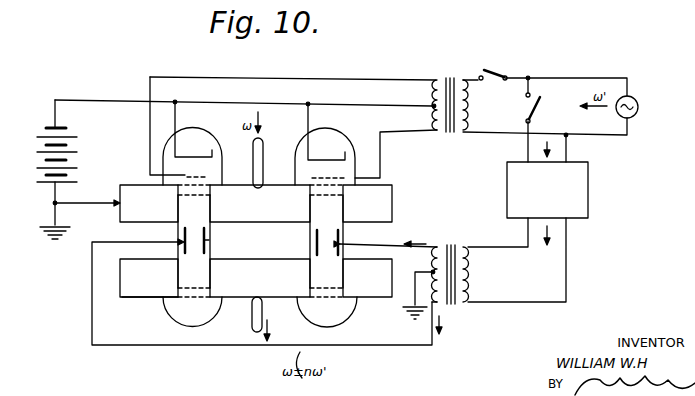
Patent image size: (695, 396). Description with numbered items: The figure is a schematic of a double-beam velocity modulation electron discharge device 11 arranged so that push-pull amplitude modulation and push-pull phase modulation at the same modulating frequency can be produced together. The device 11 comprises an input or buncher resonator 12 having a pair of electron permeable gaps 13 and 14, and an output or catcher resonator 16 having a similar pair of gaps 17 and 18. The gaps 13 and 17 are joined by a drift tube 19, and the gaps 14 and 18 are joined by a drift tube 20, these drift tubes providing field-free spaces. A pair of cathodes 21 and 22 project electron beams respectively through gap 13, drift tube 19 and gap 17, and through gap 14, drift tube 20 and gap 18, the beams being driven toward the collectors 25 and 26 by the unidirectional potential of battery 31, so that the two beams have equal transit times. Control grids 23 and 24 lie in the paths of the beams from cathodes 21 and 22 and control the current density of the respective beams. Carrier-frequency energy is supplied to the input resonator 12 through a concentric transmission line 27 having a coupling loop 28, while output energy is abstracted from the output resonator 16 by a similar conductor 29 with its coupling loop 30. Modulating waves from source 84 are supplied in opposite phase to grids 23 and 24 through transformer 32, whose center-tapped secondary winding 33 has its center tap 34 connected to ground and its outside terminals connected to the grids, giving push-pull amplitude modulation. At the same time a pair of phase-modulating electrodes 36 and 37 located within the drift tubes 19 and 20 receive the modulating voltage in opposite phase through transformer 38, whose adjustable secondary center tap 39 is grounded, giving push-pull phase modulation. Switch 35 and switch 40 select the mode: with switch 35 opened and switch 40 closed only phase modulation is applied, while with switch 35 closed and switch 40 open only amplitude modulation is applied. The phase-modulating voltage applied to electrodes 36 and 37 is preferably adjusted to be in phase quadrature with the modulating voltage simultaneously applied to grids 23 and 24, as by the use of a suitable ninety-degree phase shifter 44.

The double-beam velocity modulation electron discharge device 11 is at (397, 201).
The input resonator 12 is at (134, 183).
The electron permeable gap 13 is at (176, 190).
The electron permeable gap 14 is at (350, 192).
The output resonator 16 is at (147, 299).
The electron permeable gap 17 is at (178, 291).
The electron permeable gap 18 is at (345, 293).
The drift tube 19 is at (212, 257).
The drift tube 20 is at (315, 246).
The cathode 21 is at (218, 115).
The cathode 22 is at (330, 160).
The control grid 23 is at (185, 176).
The control grid 24 is at (344, 177).
The collector 25 is at (200, 322).
The collector 26 is at (349, 319).
The concentric transmission line 27 is at (266, 162).
The coupling loop 28 is at (262, 190).
The high-frequency energy conductor 29 is at (270, 313).
The coupling loop 30 is at (264, 295).
The battery 31 is at (86, 149).
The transformer 32 is at (450, 78).
The center-tapped secondary winding 33 is at (436, 83).
The center tap 34 is at (432, 106).
The switch 35 is at (488, 72).
The phase-modulating electrode 36 is at (210, 240).
The phase-modulating electrode 37 is at (343, 243).
The transformer 38 is at (456, 305).
The secondary winding center-tap 39 is at (432, 272).
The switch 40 is at (537, 104).
The phase shifter 44 is at (590, 188).
The source 84 is at (640, 97).